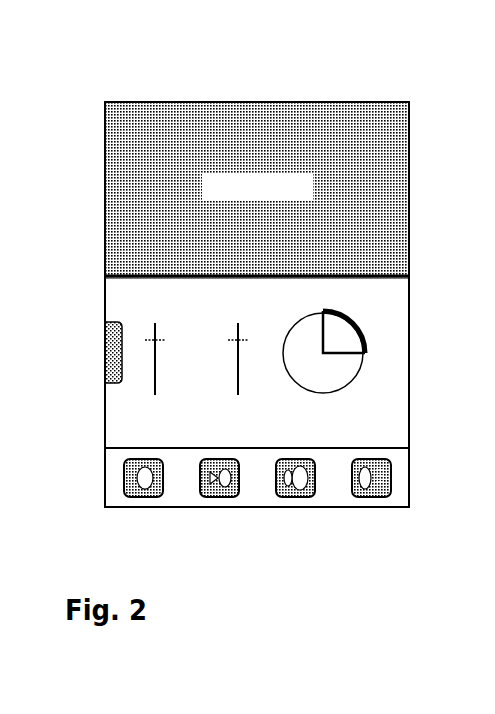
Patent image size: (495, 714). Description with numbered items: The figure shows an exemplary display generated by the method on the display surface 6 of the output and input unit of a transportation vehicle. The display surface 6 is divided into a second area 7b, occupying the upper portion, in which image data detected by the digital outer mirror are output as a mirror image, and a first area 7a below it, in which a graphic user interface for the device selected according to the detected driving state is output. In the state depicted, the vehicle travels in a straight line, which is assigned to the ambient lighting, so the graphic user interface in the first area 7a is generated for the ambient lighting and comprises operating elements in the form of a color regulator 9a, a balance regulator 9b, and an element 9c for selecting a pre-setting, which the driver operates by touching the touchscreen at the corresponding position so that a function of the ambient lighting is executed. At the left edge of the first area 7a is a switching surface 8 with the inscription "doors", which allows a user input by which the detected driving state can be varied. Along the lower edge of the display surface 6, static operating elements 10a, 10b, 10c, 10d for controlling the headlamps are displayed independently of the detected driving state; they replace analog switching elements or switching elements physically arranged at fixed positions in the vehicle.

The display surface 6 is at (302, 91).
The first area 7a is at (381, 306).
The second area 7b is at (162, 150).
The switching surface 8 is at (107, 333).
The color regulator 9a is at (152, 395).
The balance regulator 9b is at (238, 387).
The element for selecting a pre-setting 9c is at (333, 378).
The static operating element 10a is at (141, 497).
The static operating element 10b is at (220, 497).
The static operating element 10c is at (295, 497).
The static operating element 10d is at (372, 497).